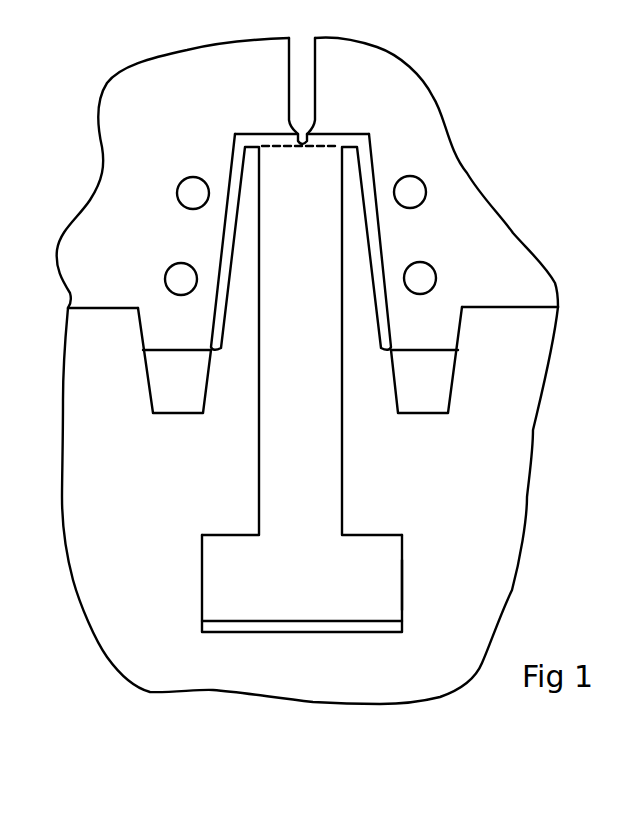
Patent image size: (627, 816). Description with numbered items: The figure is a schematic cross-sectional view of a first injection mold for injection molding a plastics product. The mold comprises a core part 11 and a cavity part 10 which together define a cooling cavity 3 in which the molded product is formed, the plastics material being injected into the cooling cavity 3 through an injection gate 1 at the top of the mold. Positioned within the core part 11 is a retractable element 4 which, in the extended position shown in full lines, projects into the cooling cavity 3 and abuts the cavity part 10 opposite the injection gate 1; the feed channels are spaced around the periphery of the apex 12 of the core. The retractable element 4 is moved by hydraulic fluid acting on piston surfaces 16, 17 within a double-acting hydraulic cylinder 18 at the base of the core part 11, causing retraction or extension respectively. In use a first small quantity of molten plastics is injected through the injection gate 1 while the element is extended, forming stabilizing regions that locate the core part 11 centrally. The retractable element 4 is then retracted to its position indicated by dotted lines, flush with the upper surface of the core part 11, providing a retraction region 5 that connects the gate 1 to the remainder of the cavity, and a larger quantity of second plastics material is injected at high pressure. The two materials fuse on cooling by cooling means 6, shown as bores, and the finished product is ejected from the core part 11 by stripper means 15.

The injection gate 1 is at (303, 128).
The cooling cavity 3 is at (373, 232).
The retractable element 4 is at (302, 341).
The retraction region 5 is at (310, 140).
The cooling means 6 is at (428, 277).
The cavity part 10 is at (307, 172).
The core part 11 is at (310, 505).
The apex of the core 12 is at (293, 130).
The stripper means 15 is at (426, 360).
The piston surface 16 is at (408, 512).
The piston surface 17 is at (273, 620).
The double-acting hydraulic cylinder 18 is at (402, 582).